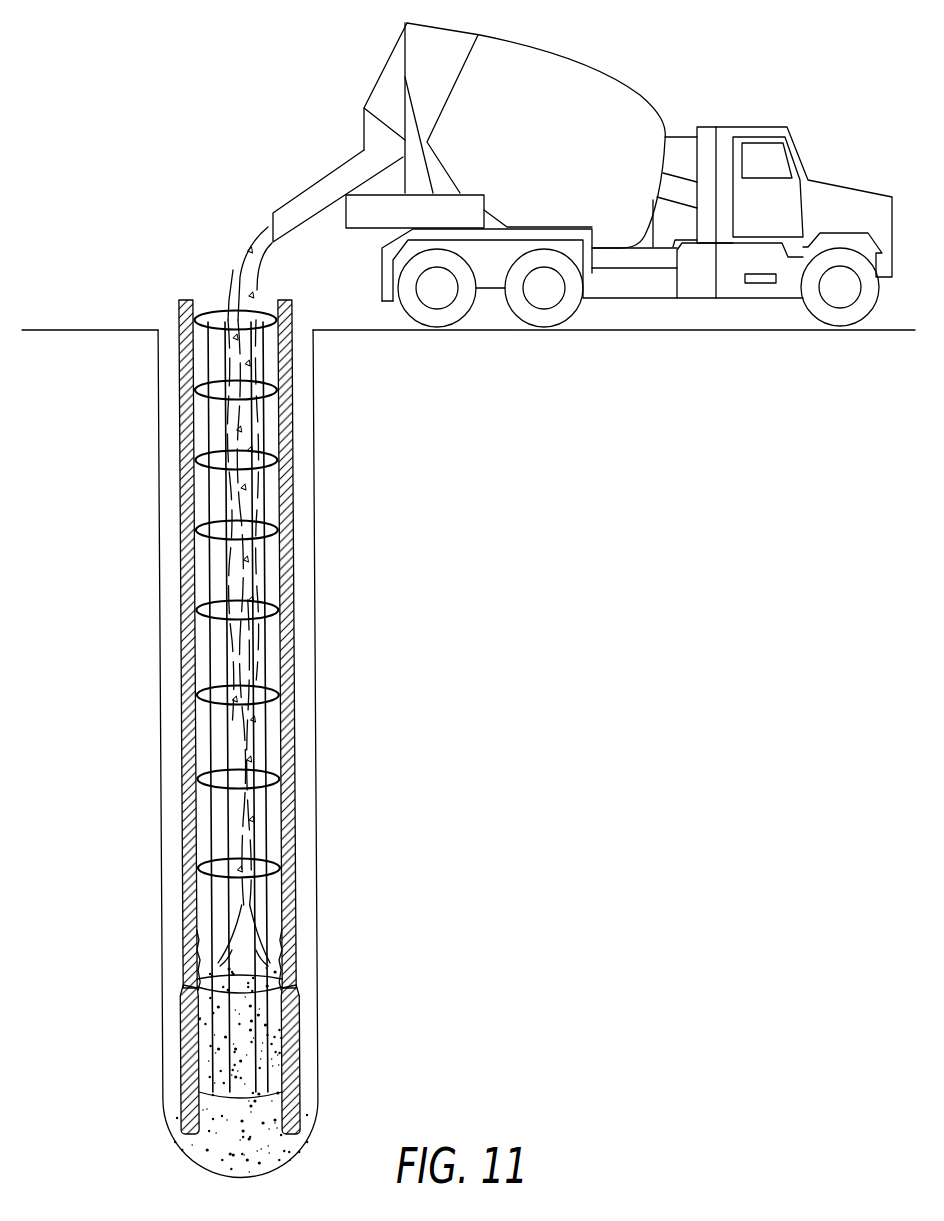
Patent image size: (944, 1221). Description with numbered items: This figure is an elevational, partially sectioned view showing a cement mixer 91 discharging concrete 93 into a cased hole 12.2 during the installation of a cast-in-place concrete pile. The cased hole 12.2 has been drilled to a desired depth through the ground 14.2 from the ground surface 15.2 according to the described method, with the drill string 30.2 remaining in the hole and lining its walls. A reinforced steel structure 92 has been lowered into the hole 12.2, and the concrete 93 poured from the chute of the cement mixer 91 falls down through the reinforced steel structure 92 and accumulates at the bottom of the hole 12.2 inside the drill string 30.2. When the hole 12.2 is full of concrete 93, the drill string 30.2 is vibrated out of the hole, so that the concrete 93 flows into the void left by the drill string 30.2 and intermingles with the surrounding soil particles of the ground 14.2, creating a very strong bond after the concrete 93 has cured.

The cement mixer 91 is at (537, 107).
The reinforced steel structure 92 is at (200, 712).
The concrete 93 is at (223, 845).
The cased hole 12.2 is at (318, 700).
The ground 14.2 is at (97, 377).
The ground surface 15.2 is at (135, 329).
The drill string 30.2 is at (294, 840).